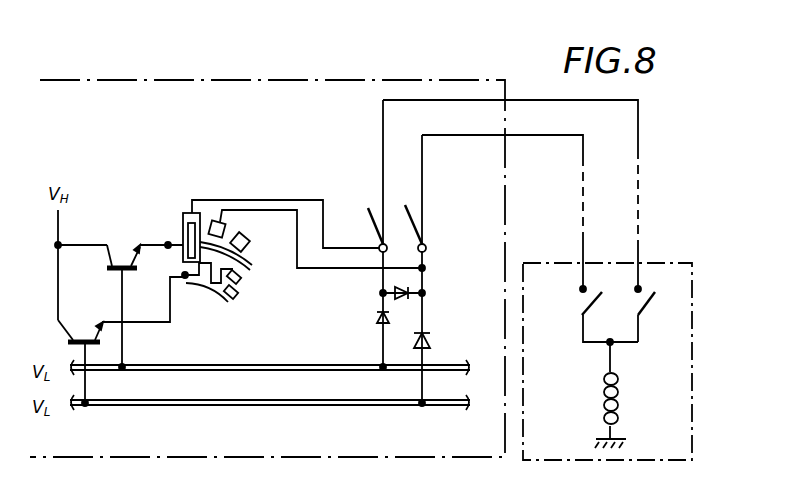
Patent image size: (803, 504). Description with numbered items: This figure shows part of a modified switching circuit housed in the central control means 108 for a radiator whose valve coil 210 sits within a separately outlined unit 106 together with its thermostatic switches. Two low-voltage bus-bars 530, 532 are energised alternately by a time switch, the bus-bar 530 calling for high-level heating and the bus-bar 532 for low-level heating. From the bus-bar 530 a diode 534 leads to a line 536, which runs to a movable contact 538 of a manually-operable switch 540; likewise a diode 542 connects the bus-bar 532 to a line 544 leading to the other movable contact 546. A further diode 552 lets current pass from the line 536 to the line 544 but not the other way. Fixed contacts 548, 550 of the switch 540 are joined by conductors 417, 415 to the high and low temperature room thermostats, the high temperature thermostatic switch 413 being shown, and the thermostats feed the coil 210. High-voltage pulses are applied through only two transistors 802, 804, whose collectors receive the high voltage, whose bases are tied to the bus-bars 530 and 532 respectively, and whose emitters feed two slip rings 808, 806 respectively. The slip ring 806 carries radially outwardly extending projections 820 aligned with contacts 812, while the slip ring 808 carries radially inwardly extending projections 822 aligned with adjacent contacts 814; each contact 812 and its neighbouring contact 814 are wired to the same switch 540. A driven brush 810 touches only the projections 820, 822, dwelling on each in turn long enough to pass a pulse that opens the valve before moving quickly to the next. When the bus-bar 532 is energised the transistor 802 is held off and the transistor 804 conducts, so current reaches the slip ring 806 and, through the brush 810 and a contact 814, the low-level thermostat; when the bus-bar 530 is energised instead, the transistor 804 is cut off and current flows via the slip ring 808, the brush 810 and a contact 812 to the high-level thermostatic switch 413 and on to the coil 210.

The central control means 108 is at (213, 80).
The relay unit 106 is at (637, 461).
The transistor 802 is at (118, 244).
The transistor 804 is at (108, 337).
The slip ring 806 is at (238, 300).
The slip ring 808 is at (250, 266).
The brush 810 is at (181, 240).
The contact 812 is at (186, 212).
The contact 814 is at (218, 222).
The projection 820 is at (203, 276).
The projection 822 is at (180, 270).
The bus-bar 530 is at (262, 372).
The bus-bar 532 is at (326, 408).
The diode 534 is at (377, 313).
The line 536 is at (380, 290).
The movable contact 538 is at (374, 226).
The manually-operable switch 540 is at (423, 222).
The diode 542 is at (430, 338).
The line 544 is at (424, 271).
The movable contact 546 is at (426, 238).
The fixed contact 548 is at (382, 208).
The fixed contact 550 is at (421, 208).
The diode 552 is at (408, 297).
The conductor 415 is at (537, 138).
The conductor 417 is at (622, 99).
The high temperature thermostatic switch 413 is at (652, 308).
The coil 210 is at (620, 384).